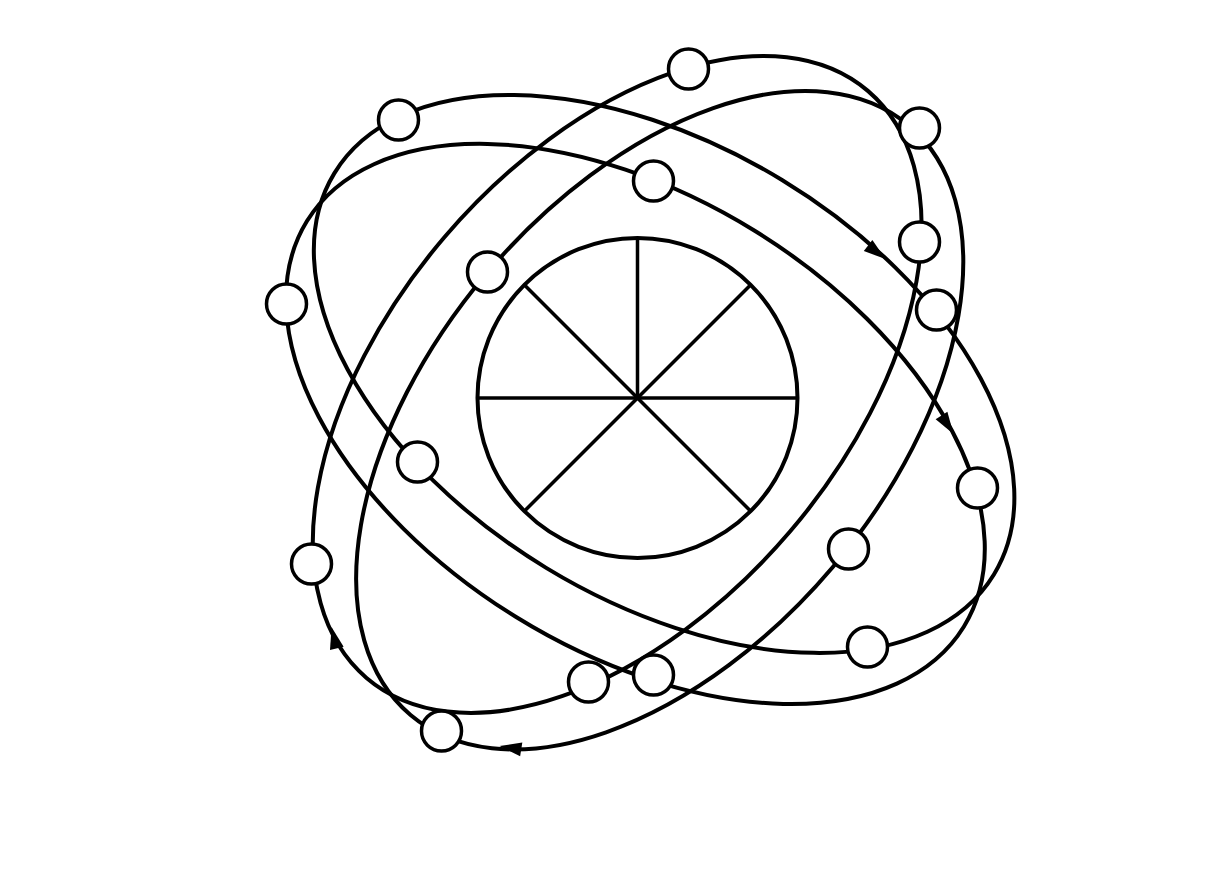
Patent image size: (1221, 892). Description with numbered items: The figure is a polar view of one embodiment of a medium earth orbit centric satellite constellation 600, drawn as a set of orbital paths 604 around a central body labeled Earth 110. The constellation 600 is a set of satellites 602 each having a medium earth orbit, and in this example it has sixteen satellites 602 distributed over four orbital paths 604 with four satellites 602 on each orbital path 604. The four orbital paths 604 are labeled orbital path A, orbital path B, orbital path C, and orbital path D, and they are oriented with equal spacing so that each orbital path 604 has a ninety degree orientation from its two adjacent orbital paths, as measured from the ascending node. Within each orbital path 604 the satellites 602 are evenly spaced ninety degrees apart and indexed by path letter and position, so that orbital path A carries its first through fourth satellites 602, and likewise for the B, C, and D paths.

The MEO centric satellite constellation 600 is at (1198, 775).
The Earth 110 is at (619, 550).
The orbital path 604 is at (180, 550).
The satellite 602 is at (956, 308).